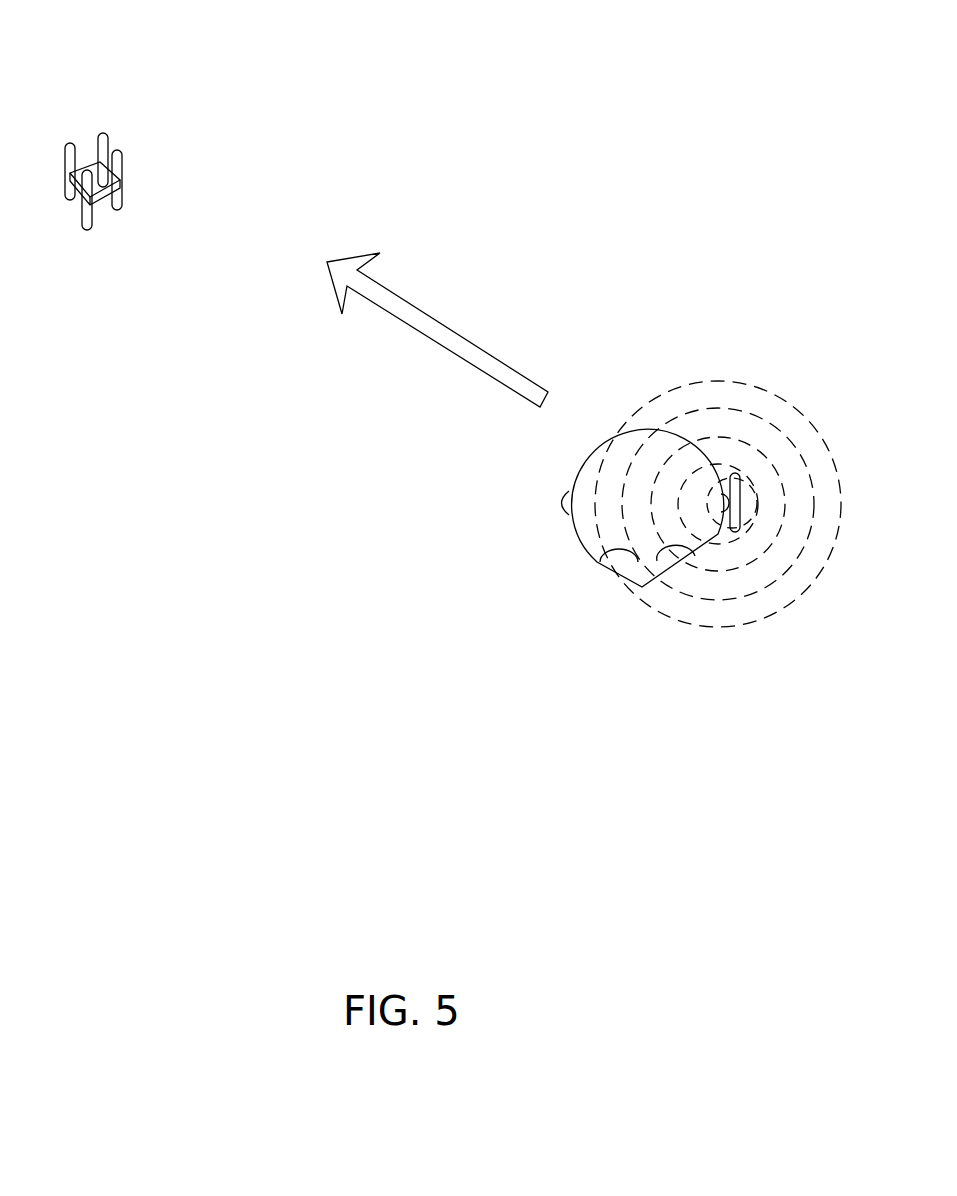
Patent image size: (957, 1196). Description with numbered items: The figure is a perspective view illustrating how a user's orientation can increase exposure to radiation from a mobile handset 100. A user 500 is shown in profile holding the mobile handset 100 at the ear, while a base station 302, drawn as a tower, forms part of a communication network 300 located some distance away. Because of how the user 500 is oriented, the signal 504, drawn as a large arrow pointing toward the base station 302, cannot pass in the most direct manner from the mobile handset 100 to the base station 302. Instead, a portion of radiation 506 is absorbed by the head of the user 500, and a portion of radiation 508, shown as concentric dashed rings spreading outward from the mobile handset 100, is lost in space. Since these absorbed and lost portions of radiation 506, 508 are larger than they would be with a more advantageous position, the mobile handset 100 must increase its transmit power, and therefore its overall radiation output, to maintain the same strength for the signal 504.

The mobile handset 100 is at (722, 544).
The communication network 300 is at (167, 92).
The base station 302 is at (84, 223).
The user 500 is at (561, 503).
The signal 504 is at (451, 327).
The portion of radiation absorbed by user 506 is at (598, 468).
The portion of radiation lost in space 508 is at (750, 588).